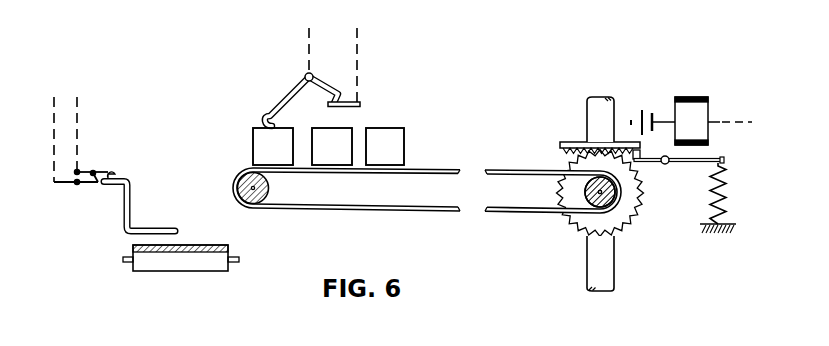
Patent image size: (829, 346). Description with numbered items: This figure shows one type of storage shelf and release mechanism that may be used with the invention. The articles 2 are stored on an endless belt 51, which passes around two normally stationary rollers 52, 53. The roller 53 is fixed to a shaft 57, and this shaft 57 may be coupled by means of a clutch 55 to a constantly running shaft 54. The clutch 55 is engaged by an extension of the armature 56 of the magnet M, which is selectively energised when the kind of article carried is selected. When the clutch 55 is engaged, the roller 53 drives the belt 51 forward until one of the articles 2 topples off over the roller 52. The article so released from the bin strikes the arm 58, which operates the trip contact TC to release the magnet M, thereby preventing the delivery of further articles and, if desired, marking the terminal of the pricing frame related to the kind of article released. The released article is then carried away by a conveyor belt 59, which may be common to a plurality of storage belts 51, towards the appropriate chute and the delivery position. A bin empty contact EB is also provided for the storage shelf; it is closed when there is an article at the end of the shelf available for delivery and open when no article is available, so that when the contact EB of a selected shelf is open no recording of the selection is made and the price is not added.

The articles 2 is at (330, 126).
The endless belt 51 is at (491, 170).
The roller 52 is at (258, 203).
The roller 53 is at (582, 212).
The constantly running shaft 54 is at (607, 267).
The clutch 55 is at (570, 148).
The armature 56 is at (703, 163).
The shaft 57 is at (618, 199).
The arm 58 is at (130, 202).
The conveyor belt 59 is at (187, 247).
The trip contact TC is at (84, 141).
The bin empty contact EB is at (312, 77).
The magnet M is at (691, 111).